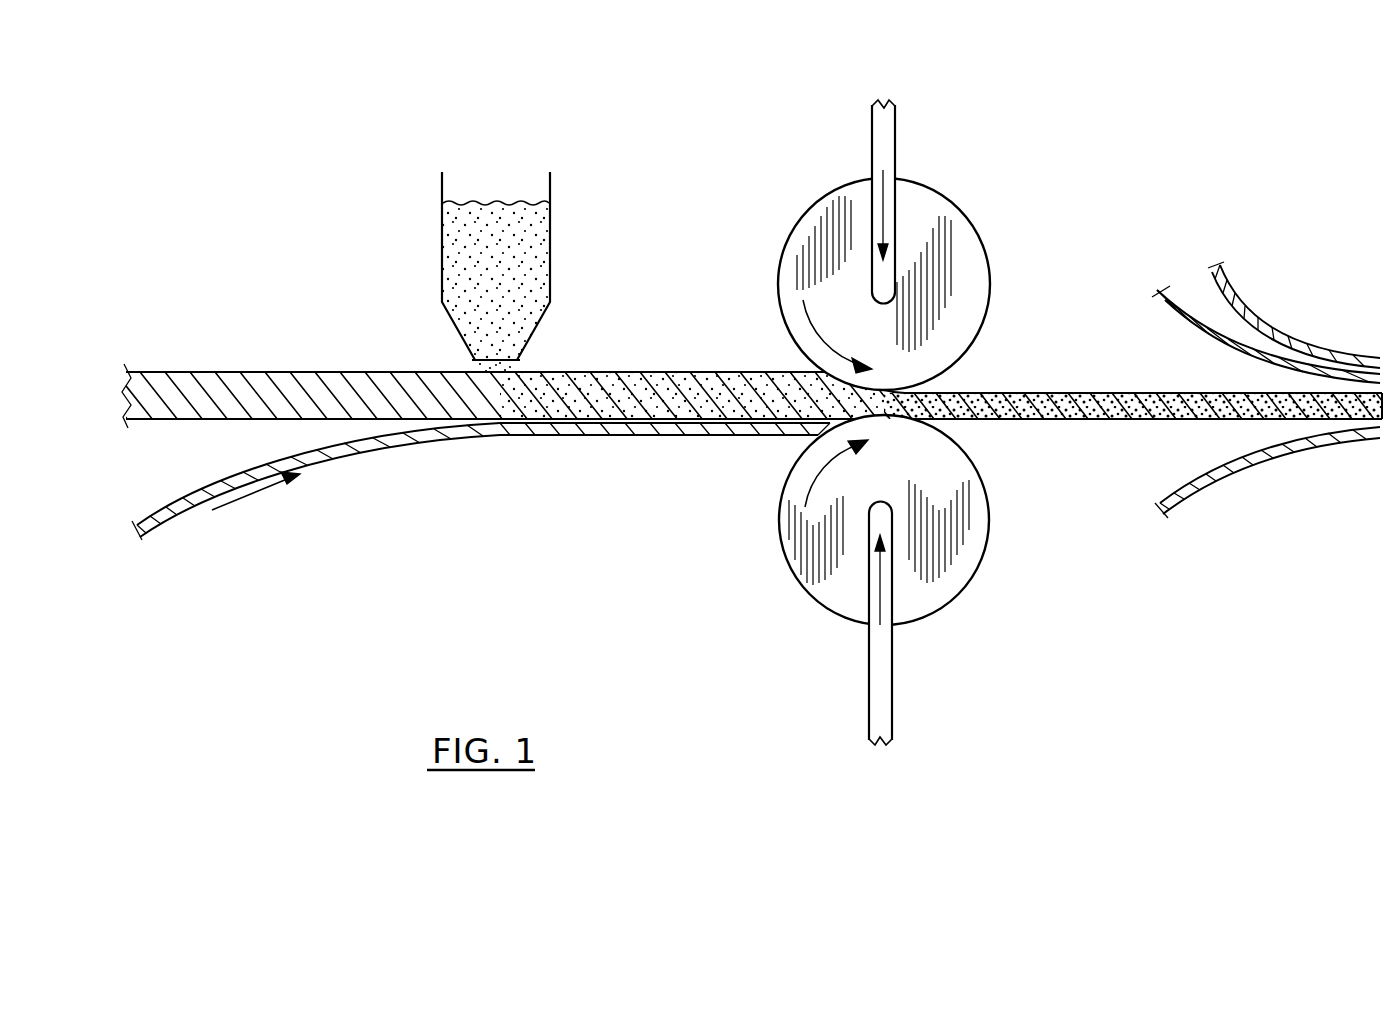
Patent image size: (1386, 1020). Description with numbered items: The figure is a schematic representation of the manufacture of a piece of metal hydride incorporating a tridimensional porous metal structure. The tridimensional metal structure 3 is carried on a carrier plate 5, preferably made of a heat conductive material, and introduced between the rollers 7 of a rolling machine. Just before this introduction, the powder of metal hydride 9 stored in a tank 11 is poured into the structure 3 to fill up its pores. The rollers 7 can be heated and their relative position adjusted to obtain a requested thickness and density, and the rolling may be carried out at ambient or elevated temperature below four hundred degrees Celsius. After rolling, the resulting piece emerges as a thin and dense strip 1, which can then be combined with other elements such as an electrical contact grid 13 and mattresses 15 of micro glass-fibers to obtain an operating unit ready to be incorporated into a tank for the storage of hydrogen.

The thin and dense strip 1 is at (1085, 420).
The tridimensional metal structure 3 is at (316, 370).
The carrier plate 5 is at (353, 438).
The rollers 7 is at (820, 228).
The powder of metal hydride 9 is at (493, 334).
The tank 11 is at (550, 283).
The electrical contact grid 13 is at (1173, 310).
The mattresses of micro glass-fibers 15 is at (1243, 300).